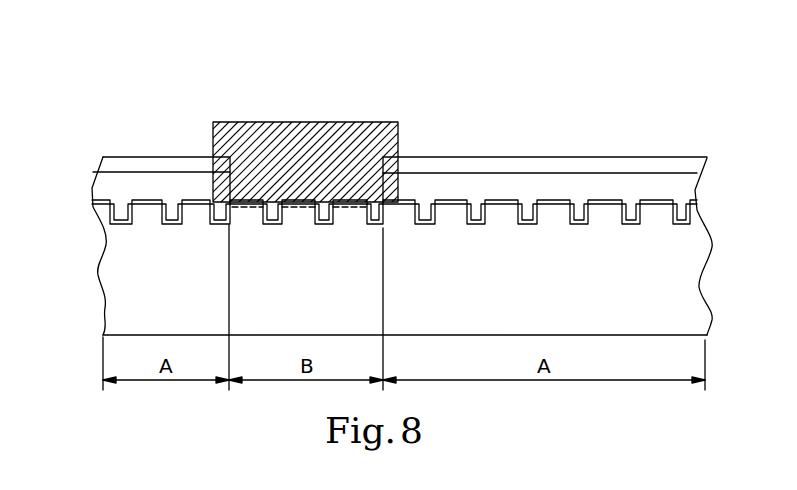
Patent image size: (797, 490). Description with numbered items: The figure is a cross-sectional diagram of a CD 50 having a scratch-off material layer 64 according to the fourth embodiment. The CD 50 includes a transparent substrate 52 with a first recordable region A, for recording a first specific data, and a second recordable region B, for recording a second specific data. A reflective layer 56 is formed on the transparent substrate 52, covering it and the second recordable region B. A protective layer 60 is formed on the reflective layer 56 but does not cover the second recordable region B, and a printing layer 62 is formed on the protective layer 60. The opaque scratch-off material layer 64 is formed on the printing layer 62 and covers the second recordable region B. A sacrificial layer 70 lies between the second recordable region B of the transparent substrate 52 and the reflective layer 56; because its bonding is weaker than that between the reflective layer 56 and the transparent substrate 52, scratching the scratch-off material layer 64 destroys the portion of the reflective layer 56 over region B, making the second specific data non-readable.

The CD 50 is at (620, 58).
The transparent substrate 52 is at (553, 301).
The reflective layer 56 is at (100, 203).
The protective layer 60 is at (103, 183).
The printing layer 62 is at (562, 167).
The scratch-off material layer 64 is at (305, 152).
The sacrificial layer 70 is at (348, 207).